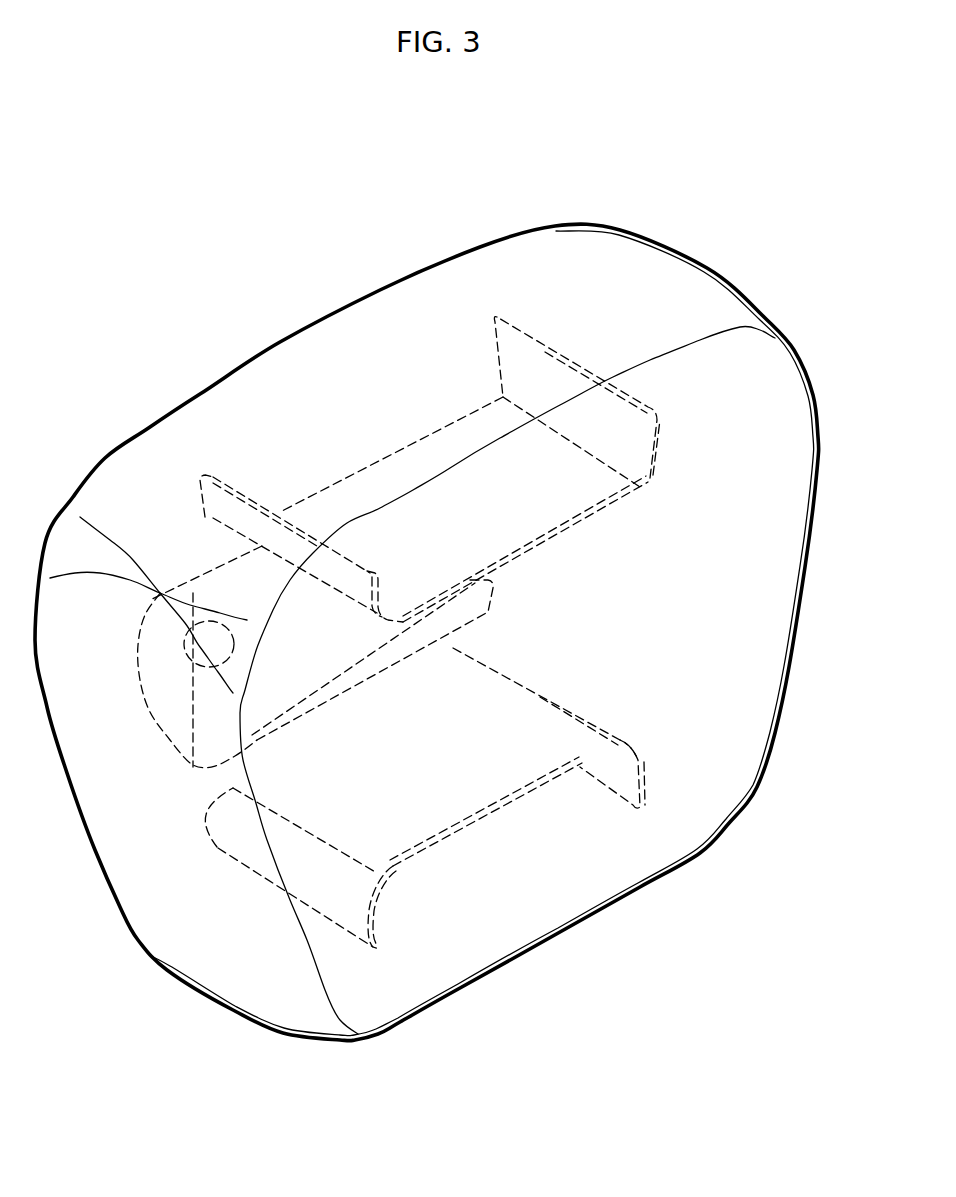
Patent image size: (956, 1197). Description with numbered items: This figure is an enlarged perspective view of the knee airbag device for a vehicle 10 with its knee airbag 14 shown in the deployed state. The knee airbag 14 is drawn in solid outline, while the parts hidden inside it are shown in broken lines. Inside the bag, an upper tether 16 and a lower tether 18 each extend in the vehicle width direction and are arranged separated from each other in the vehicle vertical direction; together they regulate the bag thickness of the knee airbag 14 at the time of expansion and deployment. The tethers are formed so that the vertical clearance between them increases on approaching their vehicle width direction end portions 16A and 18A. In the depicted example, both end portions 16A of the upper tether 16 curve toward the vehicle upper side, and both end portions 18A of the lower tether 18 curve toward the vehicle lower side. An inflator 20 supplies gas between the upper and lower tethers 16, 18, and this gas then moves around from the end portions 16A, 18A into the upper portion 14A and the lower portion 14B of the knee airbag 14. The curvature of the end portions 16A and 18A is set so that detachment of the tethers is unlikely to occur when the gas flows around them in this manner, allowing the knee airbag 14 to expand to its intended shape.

The knee airbag device for a vehicle 10 is at (623, 197).
The knee airbag 14 is at (708, 264).
The upper portion of the knee airbag 14A is at (285, 385).
The lower portion of the knee airbag 14B is at (480, 910).
The upper tether 16 is at (560, 552).
The end portions of the upper tether 16A is at (213, 518).
The lower tether 18 is at (513, 815).
The end portions of the lower tether 18A is at (215, 845).
The inflator 20 is at (236, 660).